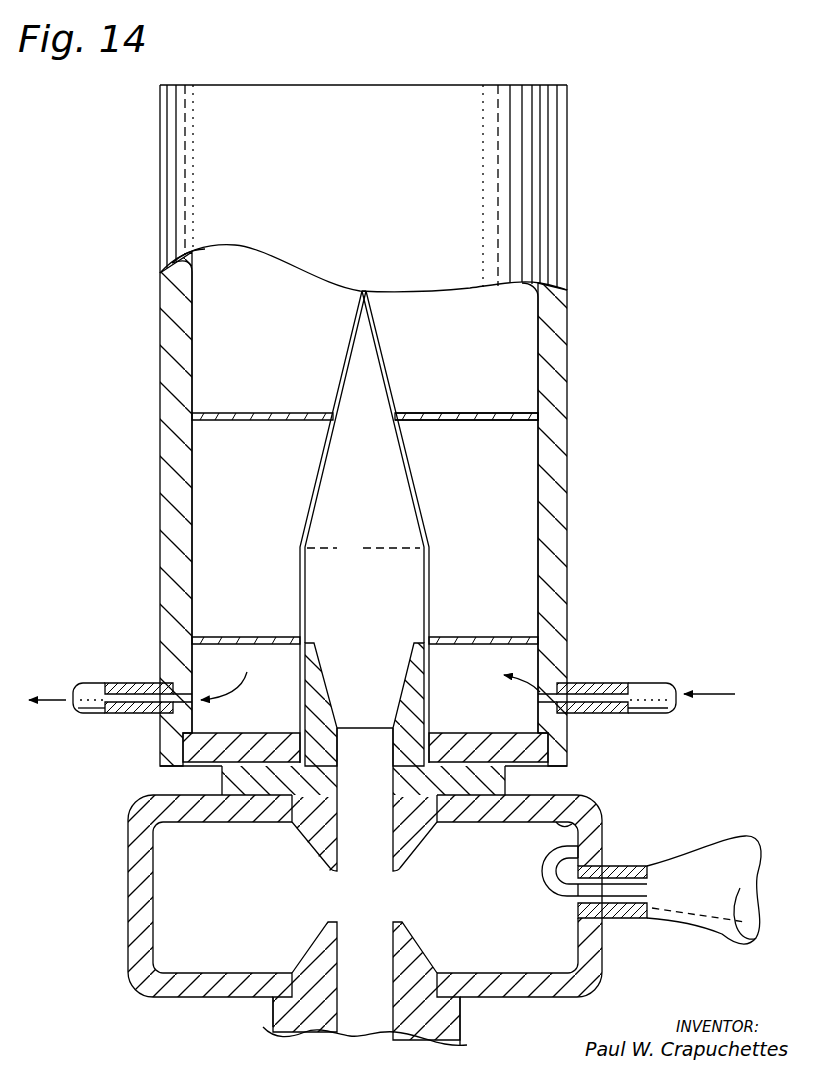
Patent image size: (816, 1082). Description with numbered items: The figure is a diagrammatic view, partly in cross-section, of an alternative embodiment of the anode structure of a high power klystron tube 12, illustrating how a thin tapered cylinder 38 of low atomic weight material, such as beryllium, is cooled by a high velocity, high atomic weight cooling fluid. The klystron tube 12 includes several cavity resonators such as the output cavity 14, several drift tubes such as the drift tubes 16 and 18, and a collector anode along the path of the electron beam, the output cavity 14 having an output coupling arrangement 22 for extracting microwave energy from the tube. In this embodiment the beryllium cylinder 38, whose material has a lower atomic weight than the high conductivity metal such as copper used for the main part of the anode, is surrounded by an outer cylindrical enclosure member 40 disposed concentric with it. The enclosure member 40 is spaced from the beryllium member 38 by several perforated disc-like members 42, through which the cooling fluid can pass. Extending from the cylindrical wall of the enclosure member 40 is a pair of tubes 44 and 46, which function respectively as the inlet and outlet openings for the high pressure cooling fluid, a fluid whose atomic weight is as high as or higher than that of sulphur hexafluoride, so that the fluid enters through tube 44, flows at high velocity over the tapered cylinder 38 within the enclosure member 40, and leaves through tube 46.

The klystron tube 12 is at (623, 381).
The output cavity 14 is at (600, 816).
The drift tube 16 is at (390, 997).
The drift tube 18 is at (338, 836).
The output coupling arrangement 22 is at (698, 858).
The thin tapered cylinder 38 is at (428, 572).
The outer cylindrical enclosure member 40 is at (552, 591).
The perforated disc-like members 42 is at (480, 420).
The tube 44 is at (604, 690).
The tube 46 is at (121, 698).